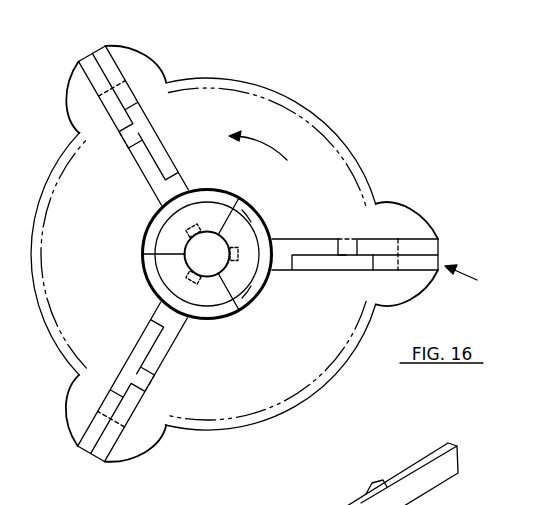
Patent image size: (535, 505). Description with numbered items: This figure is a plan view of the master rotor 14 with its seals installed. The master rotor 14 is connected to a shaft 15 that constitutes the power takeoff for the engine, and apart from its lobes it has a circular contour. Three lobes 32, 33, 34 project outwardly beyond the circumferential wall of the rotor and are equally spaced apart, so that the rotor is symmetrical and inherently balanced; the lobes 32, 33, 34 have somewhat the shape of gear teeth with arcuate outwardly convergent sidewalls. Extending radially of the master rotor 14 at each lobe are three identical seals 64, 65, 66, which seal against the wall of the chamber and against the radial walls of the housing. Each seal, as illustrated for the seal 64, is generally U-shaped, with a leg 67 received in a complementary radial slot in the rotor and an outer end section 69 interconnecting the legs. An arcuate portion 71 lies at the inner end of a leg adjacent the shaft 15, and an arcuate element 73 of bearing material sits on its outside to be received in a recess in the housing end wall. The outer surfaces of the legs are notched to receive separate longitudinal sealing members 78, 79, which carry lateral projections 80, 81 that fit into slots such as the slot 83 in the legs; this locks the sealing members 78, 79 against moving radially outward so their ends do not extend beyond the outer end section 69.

The master rotor 14 is at (307, 150).
The shaft 15 is at (212, 270).
The lobe 32 is at (405, 213).
The lobe 33 is at (145, 443).
The lobe 34 is at (123, 48).
The seal 64 is at (471, 277).
The seal 65 is at (95, 463).
The seal 66 is at (90, 63).
The leg 67 is at (331, 246).
The outer end section 69 is at (433, 248).
The arcuate portion 71 is at (241, 281).
The arcuate element of bearing material 73 is at (243, 210).
The sealing member 78 is at (425, 488).
The sealing member 79 is at (344, 264).
The lateral projection 80 is at (355, 494).
The lateral projection 81 is at (350, 252).
The slot 83 is at (357, 240).